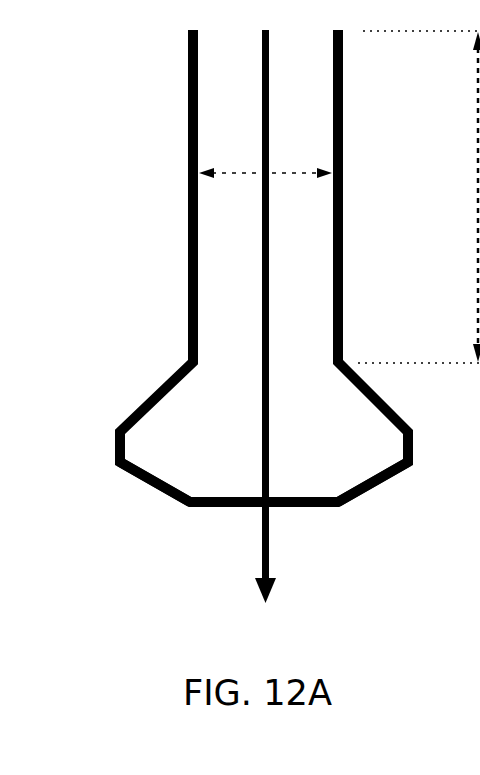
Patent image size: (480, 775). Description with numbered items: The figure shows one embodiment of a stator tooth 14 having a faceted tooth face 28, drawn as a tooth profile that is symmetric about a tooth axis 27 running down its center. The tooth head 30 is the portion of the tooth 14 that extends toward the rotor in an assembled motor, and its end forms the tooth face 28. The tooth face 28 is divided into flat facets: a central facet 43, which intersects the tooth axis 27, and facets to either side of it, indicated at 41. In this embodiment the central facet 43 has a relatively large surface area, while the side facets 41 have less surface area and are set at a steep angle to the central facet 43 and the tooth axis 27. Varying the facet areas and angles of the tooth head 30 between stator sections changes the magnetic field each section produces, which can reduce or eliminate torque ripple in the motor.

The tooth 14 is at (173, 300).
The tooth axis 27 is at (255, 556).
The tooth face 28 is at (172, 545).
The tooth head 30 is at (297, 462).
The beveled edge 41 is at (162, 495).
The central facet 43 is at (283, 508).